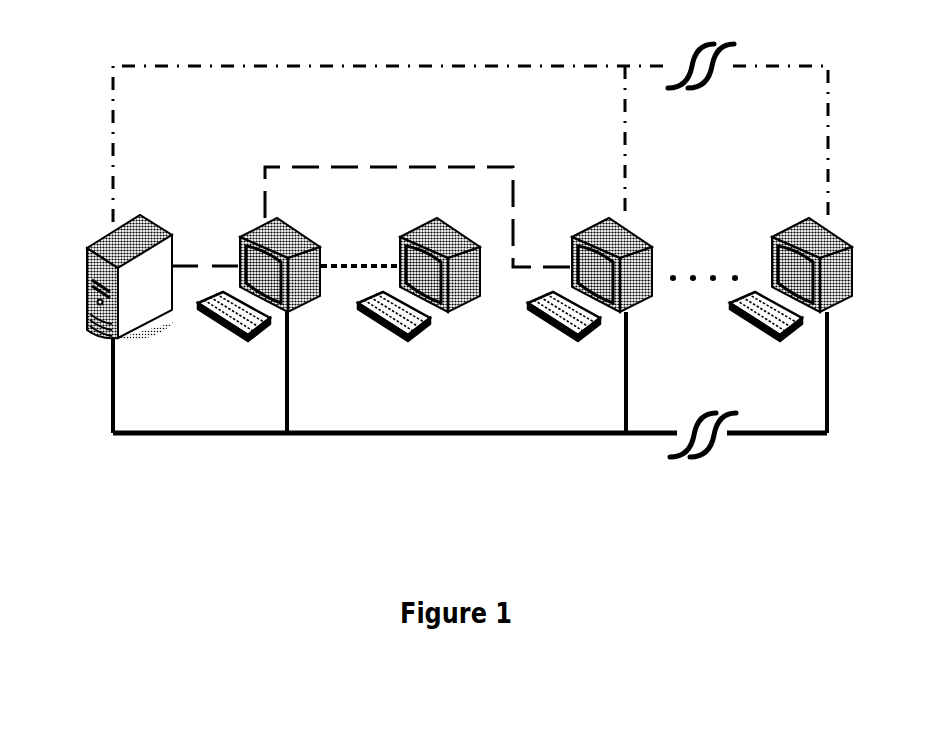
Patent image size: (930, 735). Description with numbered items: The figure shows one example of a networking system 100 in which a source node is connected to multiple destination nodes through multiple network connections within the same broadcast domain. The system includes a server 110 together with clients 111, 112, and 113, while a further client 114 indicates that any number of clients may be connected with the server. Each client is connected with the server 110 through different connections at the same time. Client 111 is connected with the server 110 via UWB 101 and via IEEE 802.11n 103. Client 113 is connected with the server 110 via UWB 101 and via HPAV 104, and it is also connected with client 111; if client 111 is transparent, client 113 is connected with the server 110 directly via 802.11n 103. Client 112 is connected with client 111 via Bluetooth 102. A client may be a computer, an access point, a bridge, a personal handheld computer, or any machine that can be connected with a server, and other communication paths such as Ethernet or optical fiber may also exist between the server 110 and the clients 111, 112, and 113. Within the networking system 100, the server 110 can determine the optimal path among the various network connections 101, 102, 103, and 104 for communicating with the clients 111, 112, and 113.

The networking system 100 is at (55, 508).
The UWB connection 101 is at (411, 438).
The Bluetooth connection 102 is at (343, 265).
The IEEE 802.11n connection 103 is at (295, 166).
The HPAV connection 104 is at (220, 64).
The server 110 is at (86, 300).
The client 111 is at (219, 335).
The client 112 is at (376, 335).
The client 113 is at (532, 300).
The client 114 is at (730, 300).